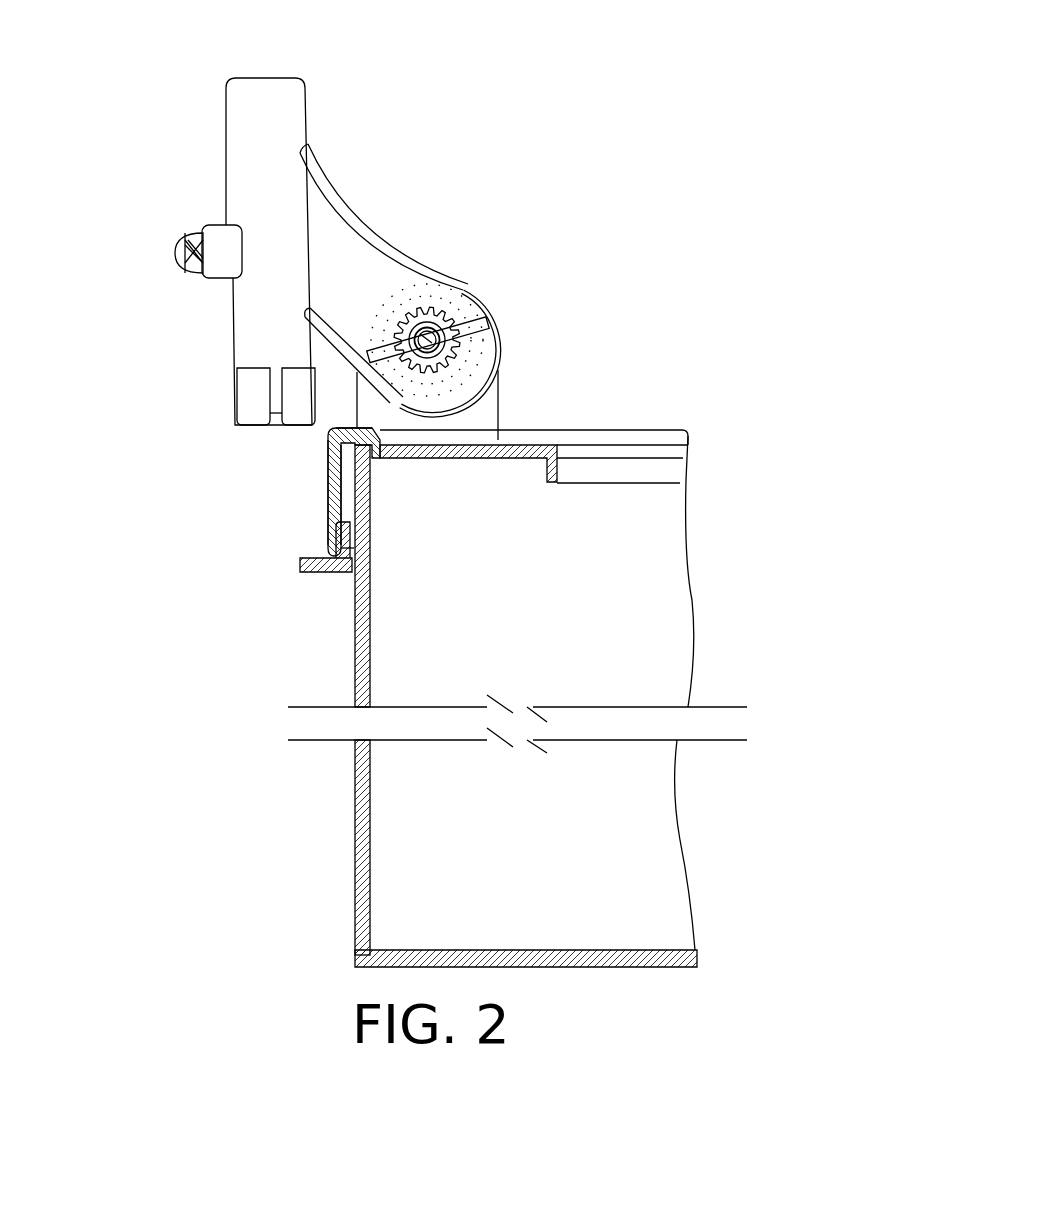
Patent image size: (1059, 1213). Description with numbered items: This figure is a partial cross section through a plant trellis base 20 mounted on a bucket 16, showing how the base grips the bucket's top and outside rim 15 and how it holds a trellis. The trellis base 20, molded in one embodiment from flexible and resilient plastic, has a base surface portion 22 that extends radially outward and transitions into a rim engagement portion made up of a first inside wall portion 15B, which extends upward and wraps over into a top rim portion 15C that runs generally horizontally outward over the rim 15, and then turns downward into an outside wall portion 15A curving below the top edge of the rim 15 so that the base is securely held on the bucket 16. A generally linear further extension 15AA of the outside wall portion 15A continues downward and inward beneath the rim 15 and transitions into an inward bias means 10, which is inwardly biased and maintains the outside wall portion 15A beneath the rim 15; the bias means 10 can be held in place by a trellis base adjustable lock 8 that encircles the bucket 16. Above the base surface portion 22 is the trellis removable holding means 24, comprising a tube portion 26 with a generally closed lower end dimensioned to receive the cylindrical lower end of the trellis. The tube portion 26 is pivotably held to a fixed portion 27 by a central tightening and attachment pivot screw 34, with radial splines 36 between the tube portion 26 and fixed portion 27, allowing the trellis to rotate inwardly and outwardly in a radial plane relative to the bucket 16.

The trellis removable holding means 24 is at (479, 164).
The tube portion 26 is at (273, 130).
The fixed portion 27 is at (473, 416).
The radial splines 36 is at (407, 302).
The central tightening and attachment pivot screw 34 is at (440, 343).
The first inside wall portion 15B is at (380, 438).
The base surface portion 22 is at (475, 443).
The top and outside rim 15 is at (347, 448).
The top rim portion 15C is at (351, 428).
The outside wall portion 15A is at (327, 473).
The further extension 15AA is at (342, 511).
The trellis base adjustable lock 8 is at (343, 550).
The inward bias means 10 is at (352, 546).
The bucket 16 is at (365, 662).
The plant trellis base 20 is at (263, 828).